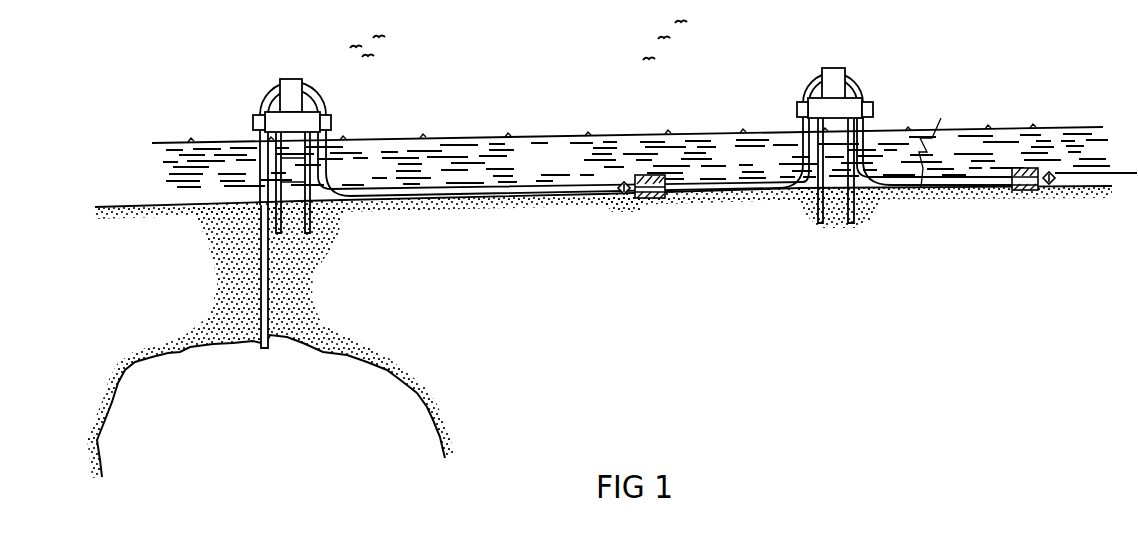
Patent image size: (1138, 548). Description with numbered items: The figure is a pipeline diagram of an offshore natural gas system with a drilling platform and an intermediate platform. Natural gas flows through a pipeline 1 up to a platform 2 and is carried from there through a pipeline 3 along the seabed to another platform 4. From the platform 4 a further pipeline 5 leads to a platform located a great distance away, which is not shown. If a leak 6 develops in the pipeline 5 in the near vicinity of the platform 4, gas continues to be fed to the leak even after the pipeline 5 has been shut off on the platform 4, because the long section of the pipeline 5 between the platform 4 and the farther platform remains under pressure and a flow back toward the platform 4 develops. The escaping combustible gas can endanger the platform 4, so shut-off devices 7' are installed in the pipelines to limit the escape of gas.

The pipeline 1 is at (265, 249).
The platform 2 is at (287, 97).
The pipeline 3 is at (710, 190).
The platform 4 is at (843, 102).
The pipeline 5 is at (975, 188).
The leak 6 is at (933, 140).
The shut-off device 7' is at (836, 209).